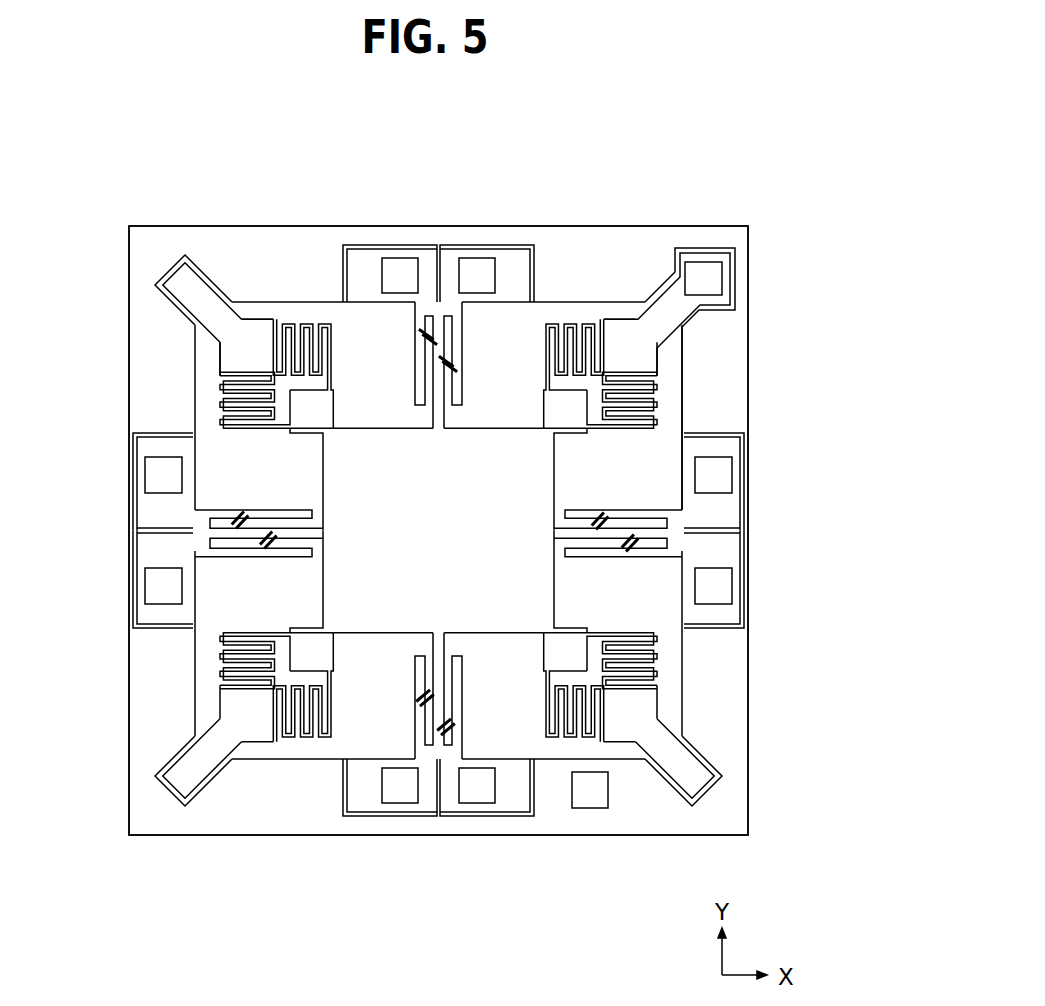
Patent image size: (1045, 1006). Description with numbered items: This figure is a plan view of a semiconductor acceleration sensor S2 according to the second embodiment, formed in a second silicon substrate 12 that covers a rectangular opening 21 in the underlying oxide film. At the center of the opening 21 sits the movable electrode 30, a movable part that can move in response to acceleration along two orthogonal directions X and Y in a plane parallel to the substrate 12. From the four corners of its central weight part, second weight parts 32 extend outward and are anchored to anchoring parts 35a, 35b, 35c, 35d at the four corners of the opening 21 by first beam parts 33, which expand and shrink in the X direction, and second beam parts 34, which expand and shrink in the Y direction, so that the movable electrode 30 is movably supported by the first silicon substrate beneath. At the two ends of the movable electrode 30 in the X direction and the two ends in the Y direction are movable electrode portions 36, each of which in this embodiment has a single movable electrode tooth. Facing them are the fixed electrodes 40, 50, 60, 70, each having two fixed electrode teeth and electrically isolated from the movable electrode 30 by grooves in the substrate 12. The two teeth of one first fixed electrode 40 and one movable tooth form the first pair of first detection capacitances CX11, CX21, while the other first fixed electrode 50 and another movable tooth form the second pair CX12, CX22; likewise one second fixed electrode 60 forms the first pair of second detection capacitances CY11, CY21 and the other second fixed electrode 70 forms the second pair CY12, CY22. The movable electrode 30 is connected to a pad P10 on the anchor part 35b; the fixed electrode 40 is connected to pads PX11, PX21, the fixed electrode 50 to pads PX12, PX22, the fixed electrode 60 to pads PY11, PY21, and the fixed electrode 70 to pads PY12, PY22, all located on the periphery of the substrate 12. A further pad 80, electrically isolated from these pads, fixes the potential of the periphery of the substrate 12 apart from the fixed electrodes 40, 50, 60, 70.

The second silicon substrate 12 is at (243, 220).
The semiconductor acceleration sensor S2 is at (760, 222).
The rectangular opening 21 is at (201, 353).
The movable electrode 30 is at (525, 593).
The second weight parts 32 is at (320, 408).
The first beam parts 33 is at (298, 328).
The second beam parts 34 is at (198, 393).
The anchoring part 35a is at (186, 272).
The anchoring part 35b is at (668, 300).
The anchoring part 35c is at (683, 778).
The anchoring part 35d is at (192, 772).
The movable electrode portions 36 is at (443, 315).
The first fixed electrode 40 is at (420, 696).
The first fixed electrode 50 is at (413, 385).
The second fixed electrode 60 is at (627, 527).
The second fixed electrode 70 is at (208, 507).
The pad 80 is at (600, 800).
The pad P10 is at (712, 276).
The first detection capacitance CX11 is at (413, 690).
The first detection capacitance CX12 is at (455, 362).
The first detection capacitance CX21 is at (447, 738).
The first detection capacitance CX22 is at (422, 330).
The second detection capacitance CY11 is at (640, 542).
The second detection capacitance CY12 is at (239, 514).
The second detection capacitance CY21 is at (617, 523).
The second detection capacitance CY22 is at (270, 538).
The pad PX11 is at (402, 797).
The pad PX12 is at (503, 281).
The pad PX21 is at (500, 797).
The pad PX22 is at (414, 268).
The pad PY11 is at (717, 575).
The pad PY12 is at (158, 470).
The pad PY21 is at (713, 487).
The pad PY22 is at (165, 563).